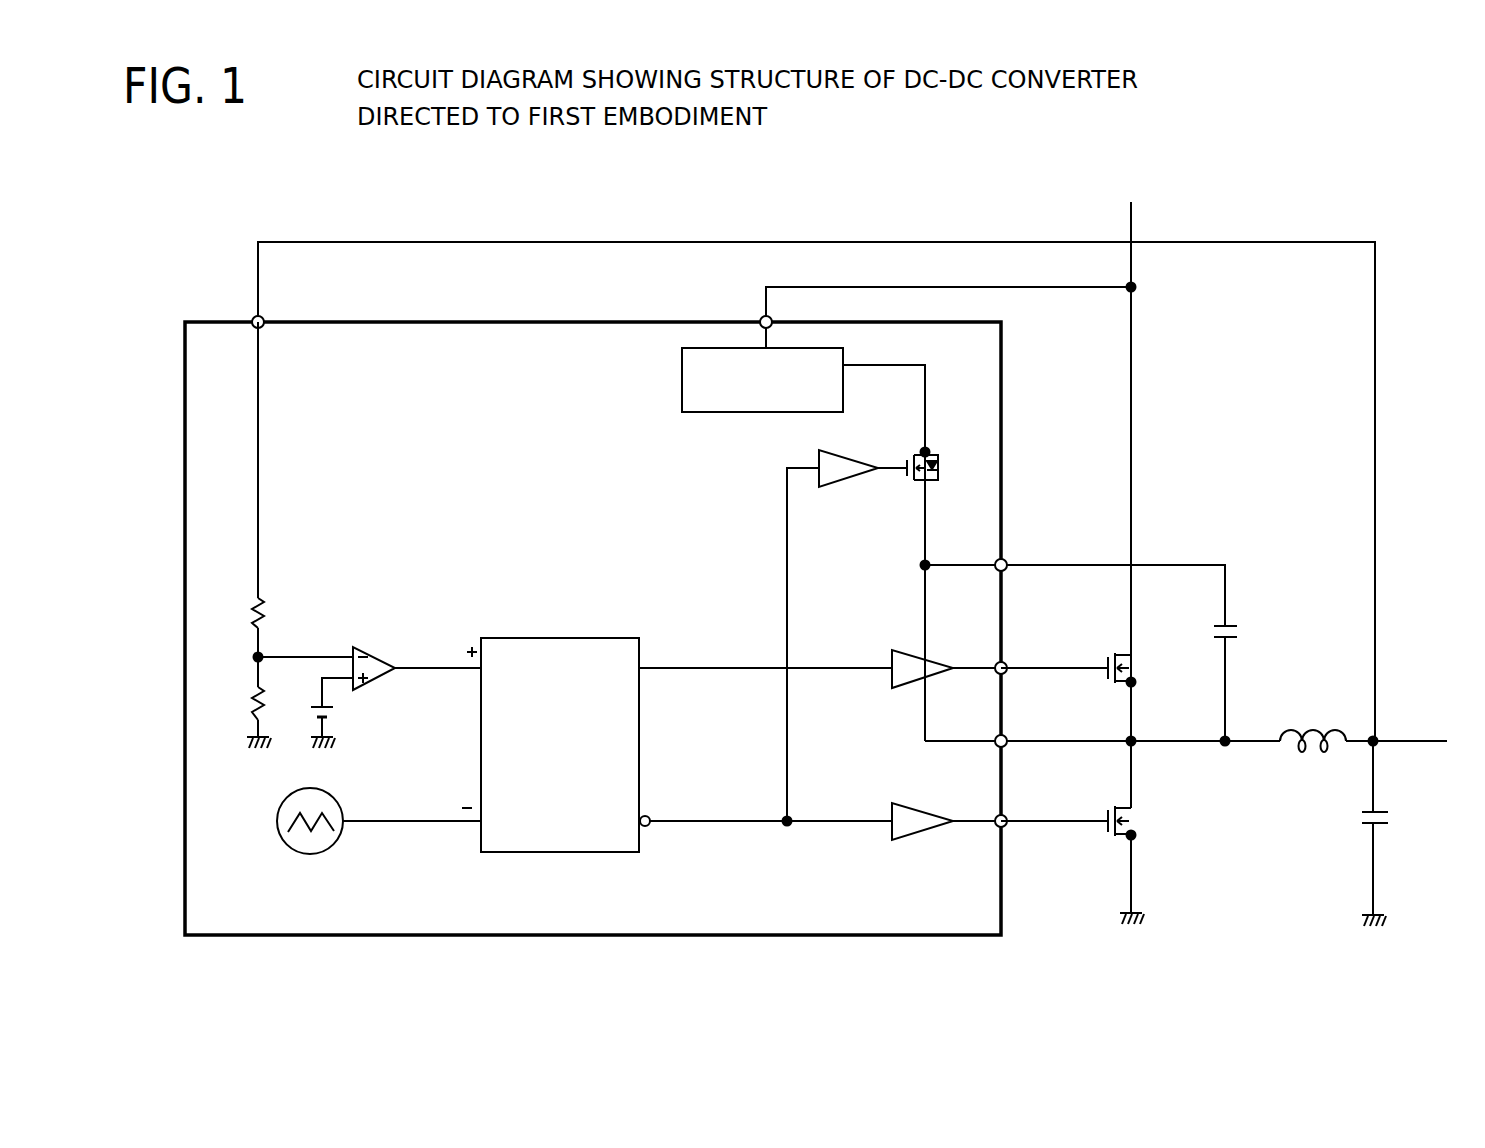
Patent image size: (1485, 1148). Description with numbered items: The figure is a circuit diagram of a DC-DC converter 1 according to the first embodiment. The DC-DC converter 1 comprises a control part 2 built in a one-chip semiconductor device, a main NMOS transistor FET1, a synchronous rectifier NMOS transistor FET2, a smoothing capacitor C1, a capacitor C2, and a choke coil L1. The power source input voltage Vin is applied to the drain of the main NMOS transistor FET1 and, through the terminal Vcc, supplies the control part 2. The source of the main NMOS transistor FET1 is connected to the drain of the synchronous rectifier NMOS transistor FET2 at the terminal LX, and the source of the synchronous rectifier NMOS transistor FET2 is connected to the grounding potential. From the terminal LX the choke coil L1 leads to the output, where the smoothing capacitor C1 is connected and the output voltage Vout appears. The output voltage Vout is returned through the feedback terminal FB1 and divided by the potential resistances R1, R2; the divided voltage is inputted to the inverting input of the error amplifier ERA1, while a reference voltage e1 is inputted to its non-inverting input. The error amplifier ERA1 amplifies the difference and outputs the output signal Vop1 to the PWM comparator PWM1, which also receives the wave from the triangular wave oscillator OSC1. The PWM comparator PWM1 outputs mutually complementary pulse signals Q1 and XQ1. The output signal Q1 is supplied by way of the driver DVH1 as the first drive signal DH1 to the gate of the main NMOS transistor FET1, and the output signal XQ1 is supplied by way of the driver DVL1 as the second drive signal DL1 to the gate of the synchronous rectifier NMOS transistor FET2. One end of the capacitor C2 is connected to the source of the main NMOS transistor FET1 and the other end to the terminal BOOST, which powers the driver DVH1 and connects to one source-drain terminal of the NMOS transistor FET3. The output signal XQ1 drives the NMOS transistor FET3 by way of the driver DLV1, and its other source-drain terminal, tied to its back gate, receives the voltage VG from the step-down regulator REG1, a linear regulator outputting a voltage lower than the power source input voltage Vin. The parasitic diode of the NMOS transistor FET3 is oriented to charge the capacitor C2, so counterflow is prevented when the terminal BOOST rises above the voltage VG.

The DC-DC converter 1 is at (797, 217).
The control part 2 is at (397, 321).
The power source input voltage Vin is at (1132, 223).
The power supply terminal Vcc is at (927, 315).
The feedback terminal FB1 is at (237, 311).
The potential resistance R1 is at (238, 489).
The potential resistance R2 is at (242, 700).
The error amplifier ERA1 is at (326, 655).
The reference voltage e1 is at (336, 713).
The output signal Vop1 is at (438, 654).
The PWM comparator PWM1 is at (640, 757).
The triangular wave oscillator OSC1 is at (379, 834).
The output signal Q1 is at (765, 656).
The output signal XQ1 is at (766, 647).
The step-down regulator REG1 is at (832, 350).
The output voltage of step-down regulator VG is at (918, 362).
The driver DLV1 is at (844, 454).
The NMOS transistor FET3 is at (900, 506).
The terminal BOOST is at (1073, 580).
The capacitor C2 is at (1207, 684).
The driver DVH1 is at (927, 657).
The first drive signal DH1 is at (1051, 656).
The main NMOS transistor FET1 is at (1147, 697).
The switching node terminal LX is at (1102, 656).
The choke coil L1 is at (1326, 725).
The output voltage Vout is at (1395, 740).
The smoothing capacitor C1 is at (1391, 833).
The driver DVL1 is at (934, 808).
The second drive signal DL1 is at (1051, 810).
The synchronous rectifier NMOS transistor FET2 is at (1147, 832).